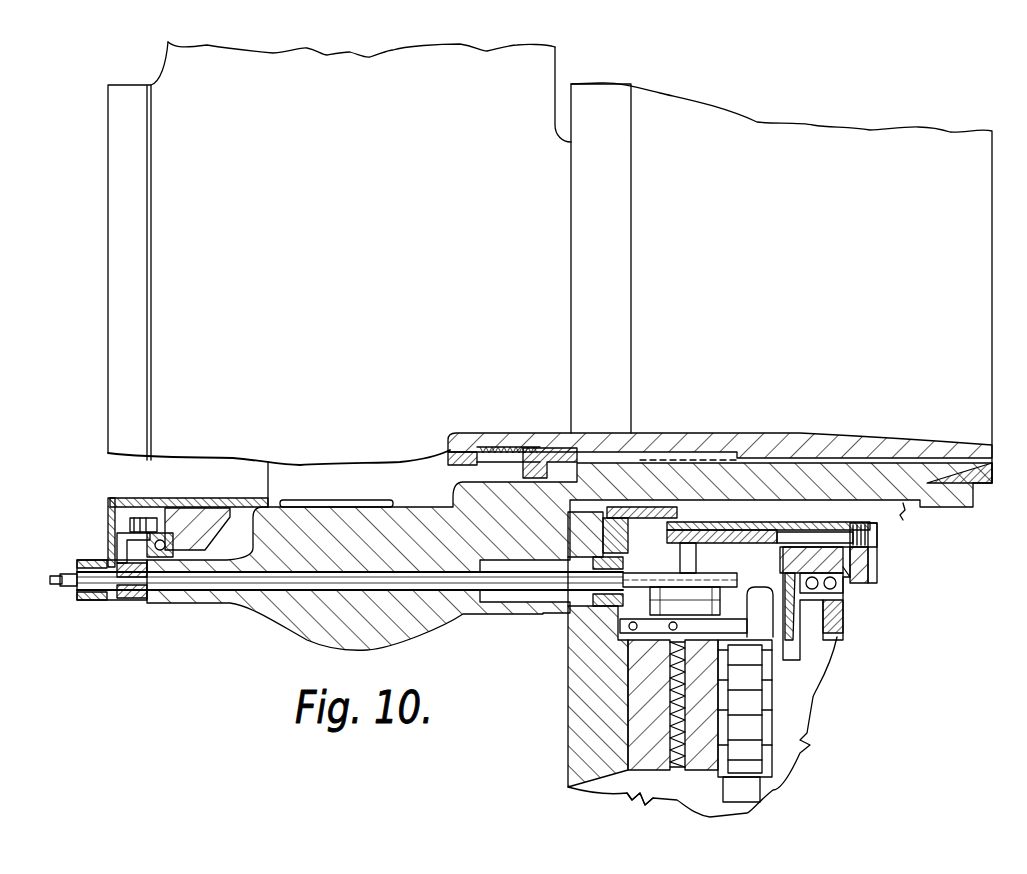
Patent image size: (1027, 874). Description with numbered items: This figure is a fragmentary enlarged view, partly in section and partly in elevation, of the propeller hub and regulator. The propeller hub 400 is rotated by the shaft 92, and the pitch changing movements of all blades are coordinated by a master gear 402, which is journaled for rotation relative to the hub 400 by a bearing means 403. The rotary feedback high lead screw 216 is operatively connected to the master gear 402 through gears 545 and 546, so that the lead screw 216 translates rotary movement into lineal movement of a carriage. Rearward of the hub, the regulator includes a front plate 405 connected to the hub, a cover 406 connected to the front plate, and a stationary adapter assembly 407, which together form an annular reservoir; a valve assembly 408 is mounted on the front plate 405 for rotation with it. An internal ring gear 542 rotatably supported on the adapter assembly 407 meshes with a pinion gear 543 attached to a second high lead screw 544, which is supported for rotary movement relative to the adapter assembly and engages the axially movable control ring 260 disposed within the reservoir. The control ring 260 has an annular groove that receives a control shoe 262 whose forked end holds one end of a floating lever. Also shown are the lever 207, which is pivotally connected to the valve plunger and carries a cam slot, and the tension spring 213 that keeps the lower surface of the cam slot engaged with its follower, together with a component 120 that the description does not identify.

The shaft 92 is at (913, 450).
The propeller hub 400 is at (697, 470).
The high lead screw 216 is at (462, 580).
The gear 545 is at (127, 597).
The master gear 402 is at (188, 508).
The gear 546 is at (127, 543).
The bearing means 403 is at (165, 550).
The control ring 260 is at (692, 530).
The high lead screw 544 is at (793, 532).
The pinion gear 543 is at (878, 533).
The internal ring gear 542 is at (875, 563).
The control shoe 262 is at (697, 563).
The lever 207 is at (743, 607).
The front plate 405 is at (567, 760).
The tension spring 213 is at (673, 770).
The switch stack 120 is at (760, 777).
The cover 406 is at (833, 638).
The stationary adapter assembly 407 is at (843, 567).
The valve assembly 408 is at (653, 798).